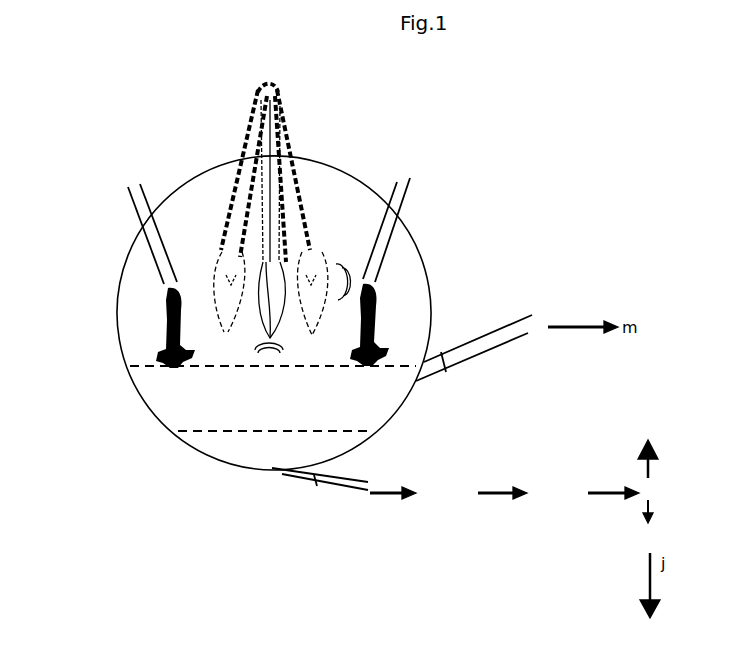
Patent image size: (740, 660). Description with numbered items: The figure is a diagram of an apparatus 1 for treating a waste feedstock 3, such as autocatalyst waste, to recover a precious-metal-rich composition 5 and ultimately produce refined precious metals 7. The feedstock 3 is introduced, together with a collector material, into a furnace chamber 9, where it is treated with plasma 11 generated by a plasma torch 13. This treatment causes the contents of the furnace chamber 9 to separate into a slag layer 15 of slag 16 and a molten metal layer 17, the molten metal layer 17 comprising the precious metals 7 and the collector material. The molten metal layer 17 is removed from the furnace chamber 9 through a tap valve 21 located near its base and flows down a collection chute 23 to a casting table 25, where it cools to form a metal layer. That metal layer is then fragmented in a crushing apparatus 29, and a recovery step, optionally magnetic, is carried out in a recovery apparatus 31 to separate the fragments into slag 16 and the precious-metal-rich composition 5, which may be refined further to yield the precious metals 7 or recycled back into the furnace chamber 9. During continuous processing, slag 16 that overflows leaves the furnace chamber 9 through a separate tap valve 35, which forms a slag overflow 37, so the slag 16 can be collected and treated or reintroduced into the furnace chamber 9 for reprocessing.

The apparatus 1 is at (112, 305).
The waste feedstock 3 is at (114, 187).
The precious-metal-rich composition 5 is at (648, 526).
The refined precious metals 7 is at (650, 597).
The furnace chamber 9 is at (440, 315).
The plasma 11 is at (272, 308).
The plasma torch 13 is at (280, 198).
The slag layer 15 is at (191, 404).
The slag 16 is at (649, 448).
The molten metal layer 17 is at (192, 456).
The tap valve 21 is at (296, 492).
The collection chute 23 is at (334, 498).
The casting table 25 is at (421, 493).
The crushing apparatus 29 is at (528, 493).
The recovery apparatus 31 is at (634, 493).
The tap valve 35 is at (448, 339).
The slag overflow 37 is at (504, 323).